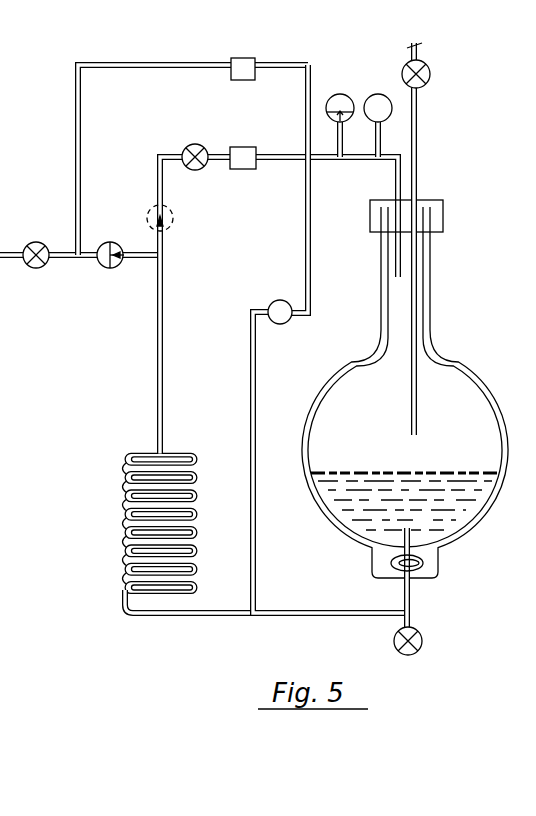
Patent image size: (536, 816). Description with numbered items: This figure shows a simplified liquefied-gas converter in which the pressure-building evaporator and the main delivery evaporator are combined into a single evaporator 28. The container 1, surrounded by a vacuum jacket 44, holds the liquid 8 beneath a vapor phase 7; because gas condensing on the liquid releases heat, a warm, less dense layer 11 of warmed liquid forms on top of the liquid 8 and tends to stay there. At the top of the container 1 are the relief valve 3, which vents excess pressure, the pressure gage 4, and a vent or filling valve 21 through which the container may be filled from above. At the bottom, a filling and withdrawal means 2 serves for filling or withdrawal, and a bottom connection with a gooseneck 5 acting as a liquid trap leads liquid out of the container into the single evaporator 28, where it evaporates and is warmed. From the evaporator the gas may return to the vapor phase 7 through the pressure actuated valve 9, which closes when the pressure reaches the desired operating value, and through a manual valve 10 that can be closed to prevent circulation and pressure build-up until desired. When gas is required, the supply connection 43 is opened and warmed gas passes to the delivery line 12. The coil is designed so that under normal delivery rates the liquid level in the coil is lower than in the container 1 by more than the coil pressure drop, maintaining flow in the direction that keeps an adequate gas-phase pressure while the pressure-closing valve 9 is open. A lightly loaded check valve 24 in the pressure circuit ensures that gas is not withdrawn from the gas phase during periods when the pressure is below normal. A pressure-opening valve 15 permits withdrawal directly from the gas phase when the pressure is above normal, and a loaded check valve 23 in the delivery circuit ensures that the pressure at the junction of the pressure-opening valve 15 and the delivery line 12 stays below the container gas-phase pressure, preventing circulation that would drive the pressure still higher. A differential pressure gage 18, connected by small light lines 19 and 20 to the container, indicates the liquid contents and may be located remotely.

The container 1 is at (419, 389).
The filling and withdrawal means 2 is at (423, 649).
The relief valve 3 is at (340, 94).
The pressure gage 4 is at (378, 94).
The gooseneck 5 is at (425, 560).
The vapor phase 7 is at (475, 441).
The liquid 8 is at (423, 505).
The pressure actuated valve 9 is at (240, 170).
The manual valve 10 is at (183, 148).
The layer of warmed liquid 11 is at (497, 478).
The delivery line 12 is at (5, 262).
The pressure-opening valve 15 is at (231, 60).
The differential pressure gage 18 is at (270, 302).
The line to the gage 19 is at (256, 386).
The line to the gage 20 is at (312, 290).
The vent or filling valve 21 is at (431, 74).
The loaded check valve 23 is at (110, 268).
The lightly loaded check valve 24 is at (174, 218).
The single evaporator 28 is at (126, 566).
The supply connection 43 is at (38, 243).
The vacuum jacket 44 is at (482, 393).